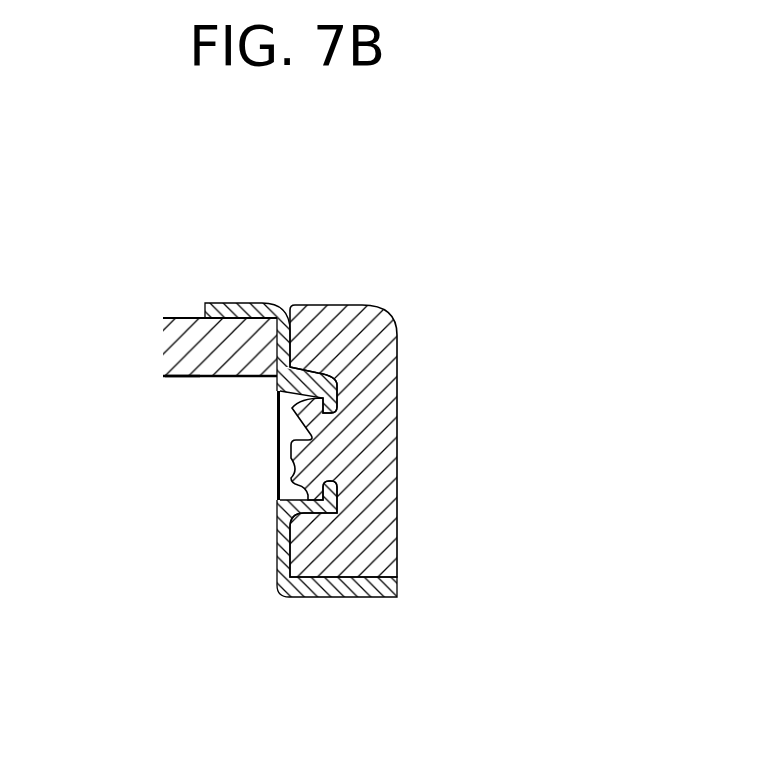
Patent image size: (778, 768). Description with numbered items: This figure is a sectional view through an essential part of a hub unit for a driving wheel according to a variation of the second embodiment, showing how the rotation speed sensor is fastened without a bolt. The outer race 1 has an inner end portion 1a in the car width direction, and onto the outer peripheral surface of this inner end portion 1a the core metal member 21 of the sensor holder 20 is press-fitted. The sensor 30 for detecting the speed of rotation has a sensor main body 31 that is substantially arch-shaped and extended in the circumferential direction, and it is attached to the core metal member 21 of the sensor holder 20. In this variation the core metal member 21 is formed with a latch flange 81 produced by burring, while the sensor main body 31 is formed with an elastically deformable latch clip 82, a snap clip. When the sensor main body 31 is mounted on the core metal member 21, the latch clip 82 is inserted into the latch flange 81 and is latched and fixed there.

The outer race 1 is at (176, 316).
The inner end portion of the outer race 1a is at (176, 378).
The sensor holder 20 is at (230, 301).
The core metal member 21 is at (277, 570).
The sensor 30 is at (417, 441).
The sensor main body 31 is at (386, 398).
The latch flange 81 is at (313, 505).
The latch clip 82 is at (293, 410).